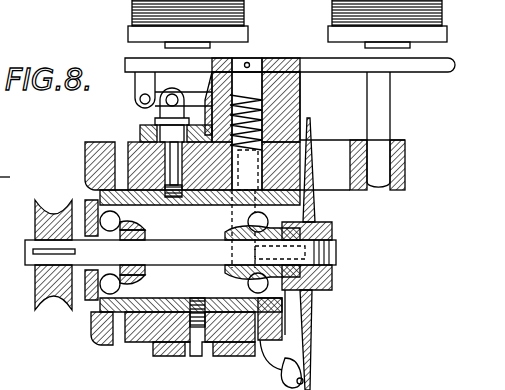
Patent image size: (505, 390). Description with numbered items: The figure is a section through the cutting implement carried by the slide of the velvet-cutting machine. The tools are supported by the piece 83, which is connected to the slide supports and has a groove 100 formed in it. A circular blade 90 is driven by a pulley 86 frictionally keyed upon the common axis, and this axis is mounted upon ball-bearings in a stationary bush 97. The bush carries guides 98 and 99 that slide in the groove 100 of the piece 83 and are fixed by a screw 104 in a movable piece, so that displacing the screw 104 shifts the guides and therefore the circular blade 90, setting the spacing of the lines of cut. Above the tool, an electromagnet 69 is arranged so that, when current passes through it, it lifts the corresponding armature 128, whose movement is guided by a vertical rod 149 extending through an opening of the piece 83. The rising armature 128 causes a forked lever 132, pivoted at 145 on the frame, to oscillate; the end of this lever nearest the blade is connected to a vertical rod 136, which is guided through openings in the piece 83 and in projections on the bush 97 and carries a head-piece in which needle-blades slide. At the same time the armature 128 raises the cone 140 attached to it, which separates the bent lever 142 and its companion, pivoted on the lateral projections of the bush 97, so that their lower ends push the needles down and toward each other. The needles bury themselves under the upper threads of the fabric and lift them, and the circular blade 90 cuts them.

The electromagnet 69 is at (230, 5).
The piece 83 is at (406, 162).
The pulley 86 is at (52, 297).
The circular blade 90 is at (318, 207).
The stationary bush 97 is at (115, 343).
The guide 98 is at (140, 157).
The guide 99 is at (168, 352).
The groove 100 is at (112, 150).
The screw 104 is at (174, 192).
The armature 128 is at (436, 64).
The forked lever 132 is at (234, 70).
The vertical rod 136 is at (236, 292).
The cone 140 is at (246, 180).
The bent lever 142 is at (333, 229).
The pivot 145 is at (140, 97).
The vertical rod 149 is at (386, 126).